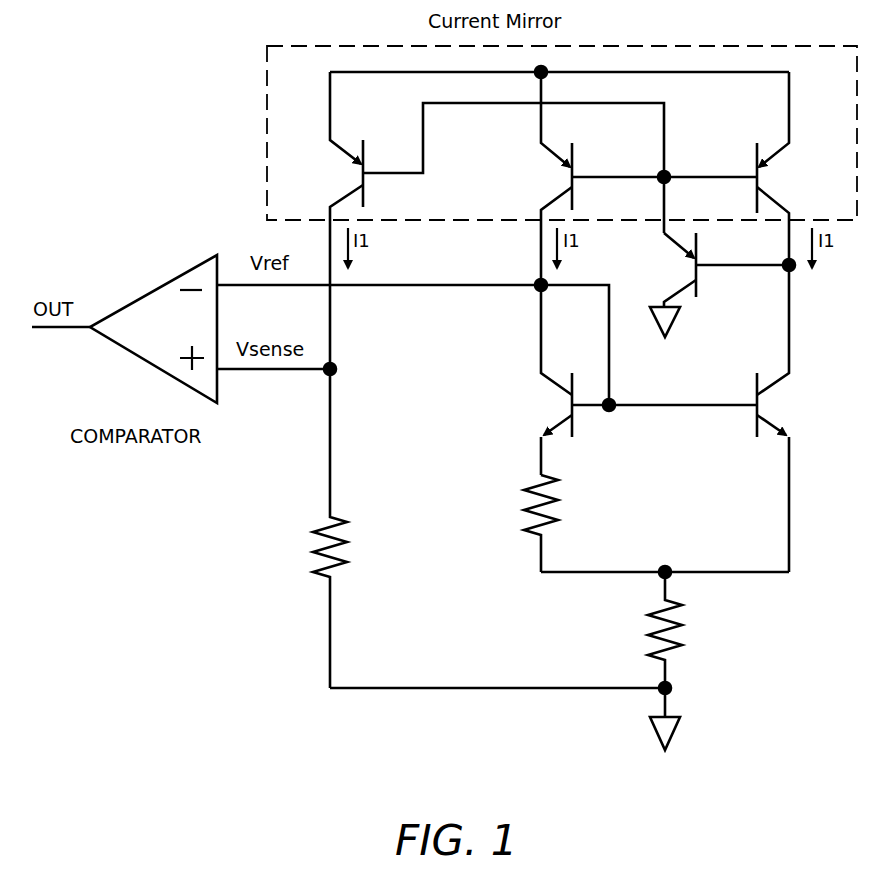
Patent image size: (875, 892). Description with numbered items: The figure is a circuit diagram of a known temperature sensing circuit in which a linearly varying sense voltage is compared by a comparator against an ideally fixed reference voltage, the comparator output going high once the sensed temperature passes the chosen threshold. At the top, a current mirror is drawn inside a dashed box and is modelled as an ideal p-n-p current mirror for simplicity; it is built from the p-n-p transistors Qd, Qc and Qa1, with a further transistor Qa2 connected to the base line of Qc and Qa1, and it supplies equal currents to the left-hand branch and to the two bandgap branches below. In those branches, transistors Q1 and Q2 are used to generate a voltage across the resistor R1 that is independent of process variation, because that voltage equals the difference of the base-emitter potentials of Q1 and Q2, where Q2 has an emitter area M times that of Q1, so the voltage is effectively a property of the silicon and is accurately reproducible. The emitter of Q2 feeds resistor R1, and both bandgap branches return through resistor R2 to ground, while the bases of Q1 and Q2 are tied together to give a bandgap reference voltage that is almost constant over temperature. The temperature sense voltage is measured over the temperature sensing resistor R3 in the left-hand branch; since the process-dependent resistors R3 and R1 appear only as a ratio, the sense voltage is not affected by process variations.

The current mirror diode-connected transistor Qd is at (334, 220).
The current mirror transistor Qc is at (549, 179).
The current mirror output transistor Qa1 is at (793, 168).
The auxiliary transistor Qa2 is at (712, 285).
The transistor Q1 is at (798, 418).
The transistor Q2 is at (611, 381).
The resistor R1 is at (523, 523).
The resistor R2 is at (647, 630).
The temperature sensing resistor R3 is at (312, 528).